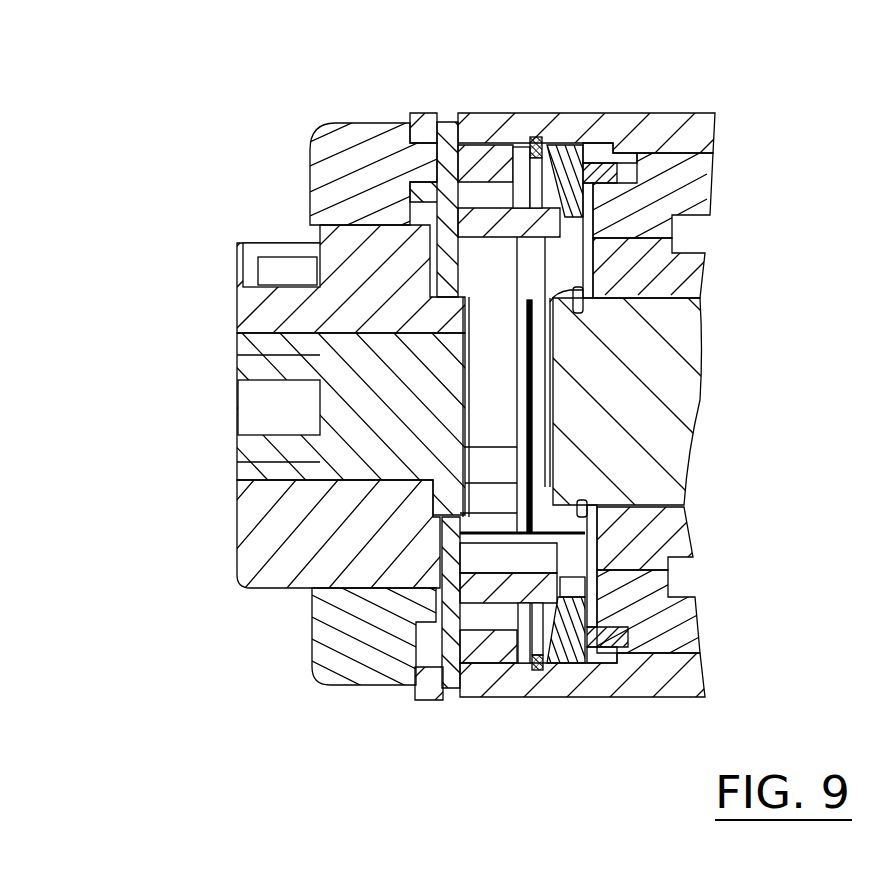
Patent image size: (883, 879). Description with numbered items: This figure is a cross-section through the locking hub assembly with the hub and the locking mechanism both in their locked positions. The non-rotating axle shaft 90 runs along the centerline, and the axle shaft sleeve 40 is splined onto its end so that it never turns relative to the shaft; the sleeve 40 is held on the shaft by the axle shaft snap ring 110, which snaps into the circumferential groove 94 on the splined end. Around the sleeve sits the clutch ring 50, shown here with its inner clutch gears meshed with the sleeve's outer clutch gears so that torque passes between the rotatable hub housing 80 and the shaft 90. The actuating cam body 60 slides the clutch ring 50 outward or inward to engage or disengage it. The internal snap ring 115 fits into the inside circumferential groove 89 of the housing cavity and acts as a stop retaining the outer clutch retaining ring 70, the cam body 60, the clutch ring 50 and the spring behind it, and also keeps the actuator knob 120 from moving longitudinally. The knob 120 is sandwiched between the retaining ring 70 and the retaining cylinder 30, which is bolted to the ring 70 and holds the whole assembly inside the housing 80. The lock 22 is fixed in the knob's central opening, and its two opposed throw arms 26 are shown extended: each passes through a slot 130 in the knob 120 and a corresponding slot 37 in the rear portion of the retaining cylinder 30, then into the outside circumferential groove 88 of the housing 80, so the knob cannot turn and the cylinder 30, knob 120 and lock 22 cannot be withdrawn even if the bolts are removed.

The lock 22 is at (226, 362).
The throw arms 26 is at (415, 190).
The retaining cylinder 30 is at (318, 627).
The slots 37 is at (426, 655).
The axle shaft sleeve 40 is at (685, 268).
The clutch ring 50 is at (683, 183).
The actuating cam body 60 is at (620, 160).
The outer clutch retaining ring 70 is at (568, 140).
The hub housing 80 is at (633, 113).
The outside circumferential groove 88 is at (450, 123).
The inside circumferential groove 89 is at (512, 122).
The axle shaft 90 is at (680, 350).
The circumferential groove 94 is at (467, 427).
The axle shaft snap ring 110 is at (553, 312).
The internal snap ring 115 is at (537, 125).
The actuator knob 120 is at (238, 540).
The slots 130 is at (418, 605).